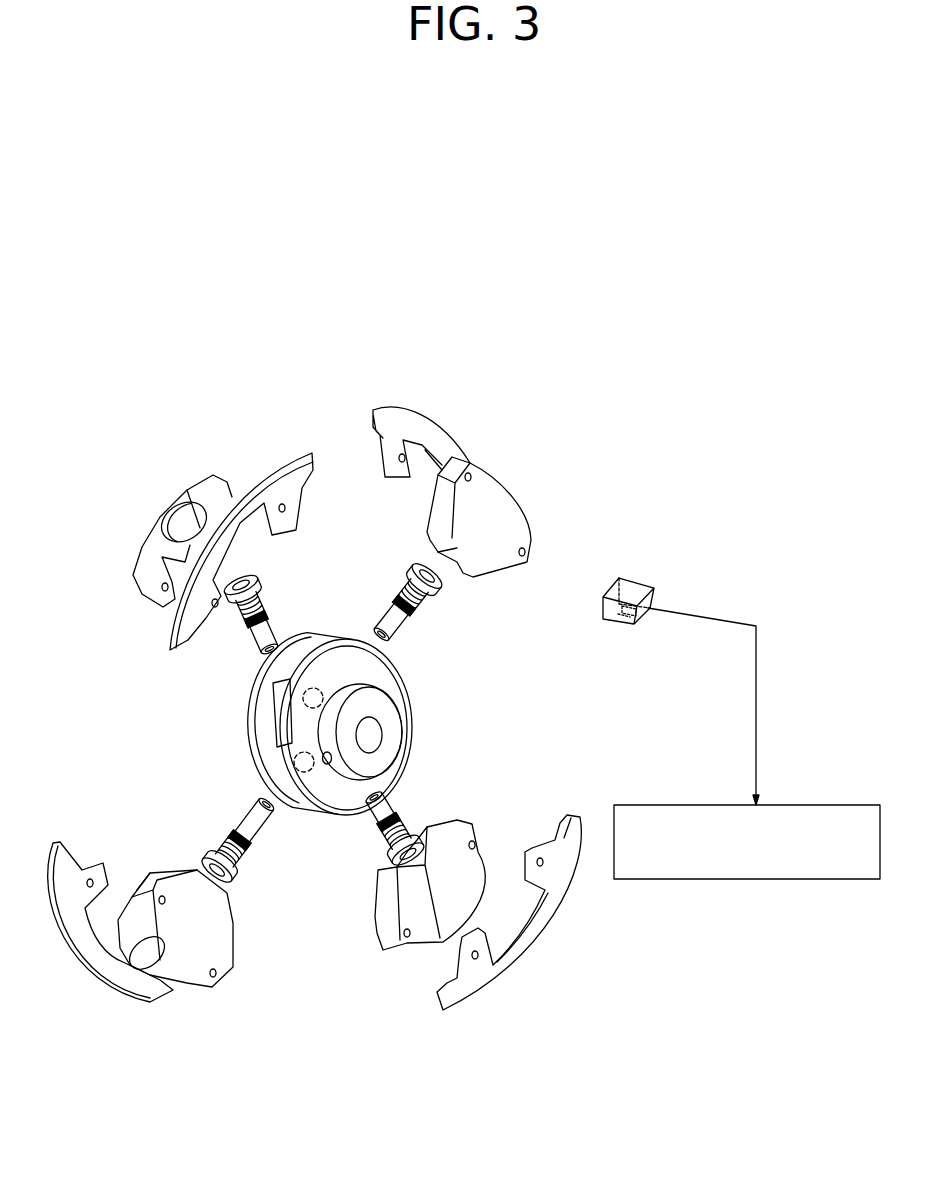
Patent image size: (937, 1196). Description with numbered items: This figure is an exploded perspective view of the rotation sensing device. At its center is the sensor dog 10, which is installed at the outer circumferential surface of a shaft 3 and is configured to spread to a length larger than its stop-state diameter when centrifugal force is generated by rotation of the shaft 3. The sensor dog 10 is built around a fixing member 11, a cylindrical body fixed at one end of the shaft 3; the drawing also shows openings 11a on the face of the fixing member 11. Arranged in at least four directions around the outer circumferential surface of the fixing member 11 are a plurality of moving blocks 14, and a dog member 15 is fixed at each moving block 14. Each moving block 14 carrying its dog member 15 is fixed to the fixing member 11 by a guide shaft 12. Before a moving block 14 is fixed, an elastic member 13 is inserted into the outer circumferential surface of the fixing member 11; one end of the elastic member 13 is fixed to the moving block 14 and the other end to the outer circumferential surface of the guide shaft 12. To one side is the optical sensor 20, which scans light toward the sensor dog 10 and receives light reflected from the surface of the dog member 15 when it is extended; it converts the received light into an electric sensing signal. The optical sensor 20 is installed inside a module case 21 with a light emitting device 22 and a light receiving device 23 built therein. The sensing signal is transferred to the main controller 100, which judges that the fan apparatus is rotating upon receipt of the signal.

The shaft 3 is at (392, 747).
The sensor dog 10 is at (249, 451).
The fixing member 11 is at (405, 700).
The fastening holes 11a is at (304, 694).
The guide shaft 12 is at (425, 594).
The elastic member 13 is at (418, 622).
The moving block 14 is at (512, 574).
The dog member 15 is at (405, 418).
The optical sensor 20 is at (646, 576).
The module case 21 is at (626, 578).
The light emitting device 22 is at (627, 626).
The light receiving device 23 is at (613, 623).
The main controller 100 is at (757, 880).